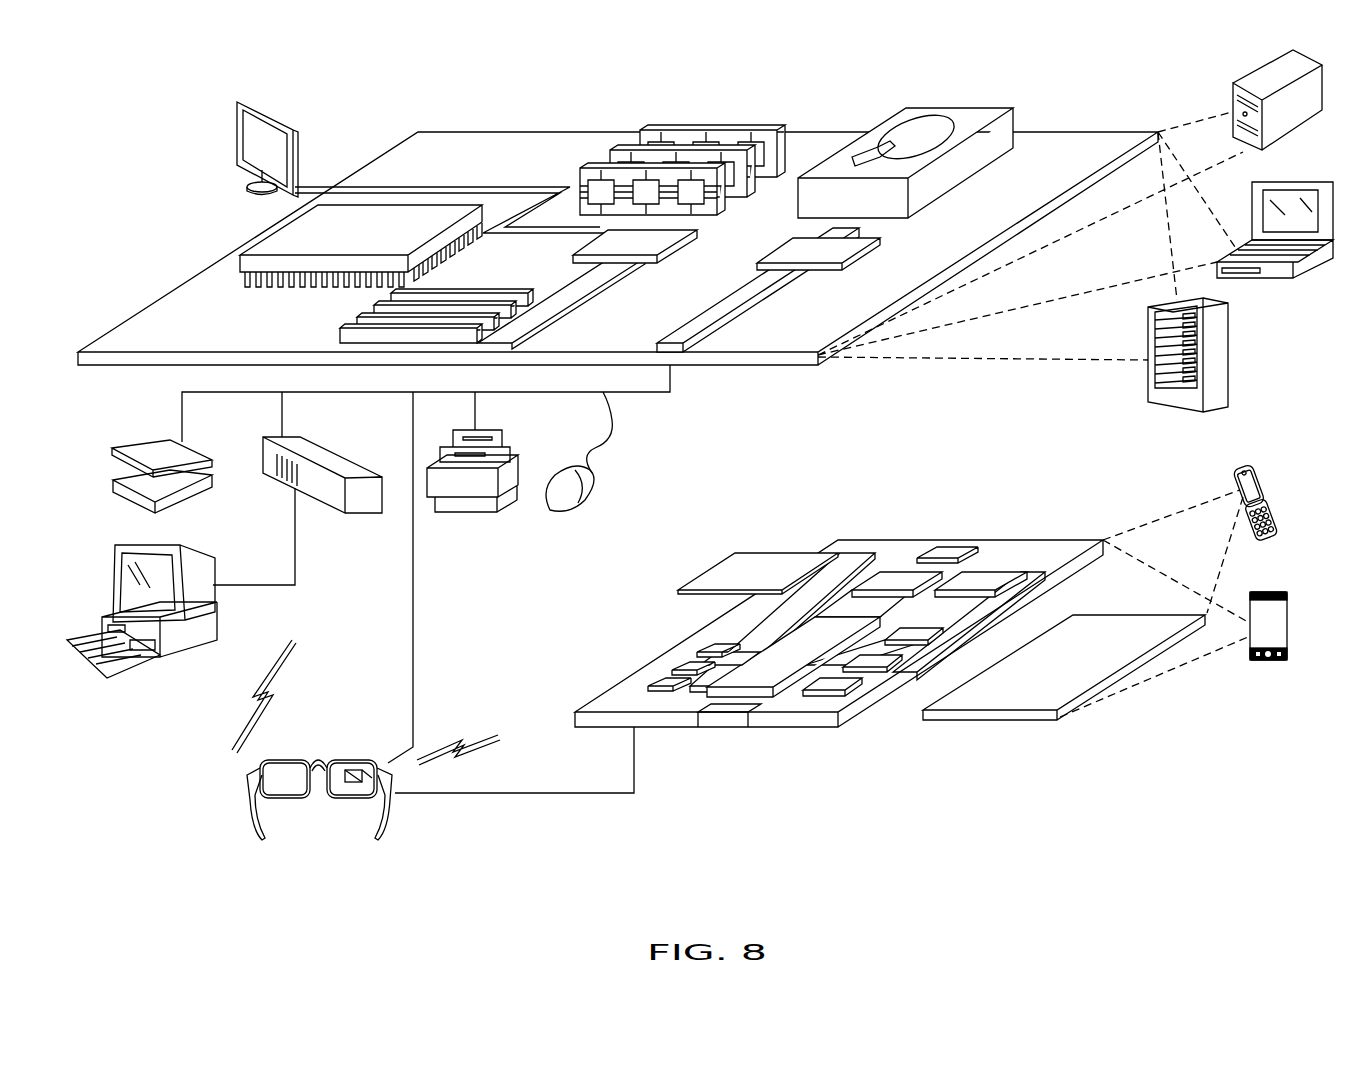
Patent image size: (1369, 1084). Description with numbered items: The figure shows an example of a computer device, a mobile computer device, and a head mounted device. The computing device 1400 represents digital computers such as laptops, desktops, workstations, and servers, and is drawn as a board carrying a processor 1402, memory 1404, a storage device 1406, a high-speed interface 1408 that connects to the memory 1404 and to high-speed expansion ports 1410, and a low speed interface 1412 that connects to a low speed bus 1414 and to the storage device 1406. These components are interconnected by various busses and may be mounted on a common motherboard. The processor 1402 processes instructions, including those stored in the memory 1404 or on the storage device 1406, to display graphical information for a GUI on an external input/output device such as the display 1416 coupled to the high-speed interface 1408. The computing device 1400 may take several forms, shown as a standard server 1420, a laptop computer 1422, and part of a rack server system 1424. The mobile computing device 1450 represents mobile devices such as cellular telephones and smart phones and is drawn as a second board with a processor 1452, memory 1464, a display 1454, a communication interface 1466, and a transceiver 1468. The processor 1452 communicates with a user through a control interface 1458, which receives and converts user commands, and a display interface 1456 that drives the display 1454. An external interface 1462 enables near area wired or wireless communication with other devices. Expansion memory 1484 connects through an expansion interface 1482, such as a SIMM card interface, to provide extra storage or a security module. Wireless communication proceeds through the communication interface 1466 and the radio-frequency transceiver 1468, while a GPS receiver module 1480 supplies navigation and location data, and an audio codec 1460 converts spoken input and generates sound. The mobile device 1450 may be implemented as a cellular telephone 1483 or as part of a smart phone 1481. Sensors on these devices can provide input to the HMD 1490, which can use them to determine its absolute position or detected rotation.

The computing device 1400 is at (372, 84).
The processor 1402 is at (262, 240).
The memory 1404 is at (715, 125).
The storage device 1406 is at (945, 107).
The high-speed interface 1408 is at (647, 240).
The high-speed expansion ports 1410 is at (362, 320).
The low speed interface 1412 is at (790, 247).
The low speed bus 1414 is at (677, 338).
The display 1416 is at (243, 101).
The standard server 1420 is at (1253, 78).
The laptop computer 1422 is at (1310, 180).
The rack server system 1424 is at (1232, 354).
The computing device 1450 is at (1142, 716).
The processor 1452 is at (763, 660).
The display 1454 is at (1103, 627).
The display interface 1456 is at (858, 692).
The control interface 1458 is at (878, 658).
The audio codec 1460 is at (905, 632).
The external interface 1462 is at (724, 715).
The memory 1464 is at (678, 665).
The communication interface 1466 is at (897, 575).
The transceiver 1468 is at (990, 575).
The GPS receiver module 1480 is at (950, 549).
The smart phone 1481 is at (1258, 592).
The expansion interface 1482 is at (822, 552).
The cellular telephone 1483 is at (1252, 465).
The expansion memory 1484 is at (737, 552).
The HMD 1490 is at (404, 799).